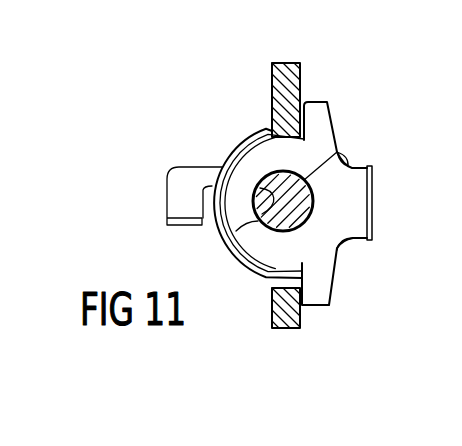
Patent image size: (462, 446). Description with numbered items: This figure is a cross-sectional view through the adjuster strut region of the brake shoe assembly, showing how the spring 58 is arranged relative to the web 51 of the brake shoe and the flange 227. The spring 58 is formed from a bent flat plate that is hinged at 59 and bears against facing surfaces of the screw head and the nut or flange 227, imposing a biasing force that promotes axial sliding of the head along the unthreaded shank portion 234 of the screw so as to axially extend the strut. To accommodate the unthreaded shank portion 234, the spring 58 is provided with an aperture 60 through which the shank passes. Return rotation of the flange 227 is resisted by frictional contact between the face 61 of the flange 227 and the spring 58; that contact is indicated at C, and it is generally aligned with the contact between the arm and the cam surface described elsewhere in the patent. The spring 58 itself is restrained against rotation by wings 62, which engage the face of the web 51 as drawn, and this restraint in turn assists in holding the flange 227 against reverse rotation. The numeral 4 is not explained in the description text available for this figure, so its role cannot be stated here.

The housing 4 is at (6, 205).
The web 51 is at (292, 83).
The spring 58 is at (258, 275).
The hinge 59 is at (374, 212).
The aperture 60 is at (228, 255).
The face 61 is at (228, 160).
The wings 62 is at (322, 118).
The flange 227 is at (250, 140).
The unthreaded shank portion 234 is at (338, 155).
The contact C is at (197, 206).